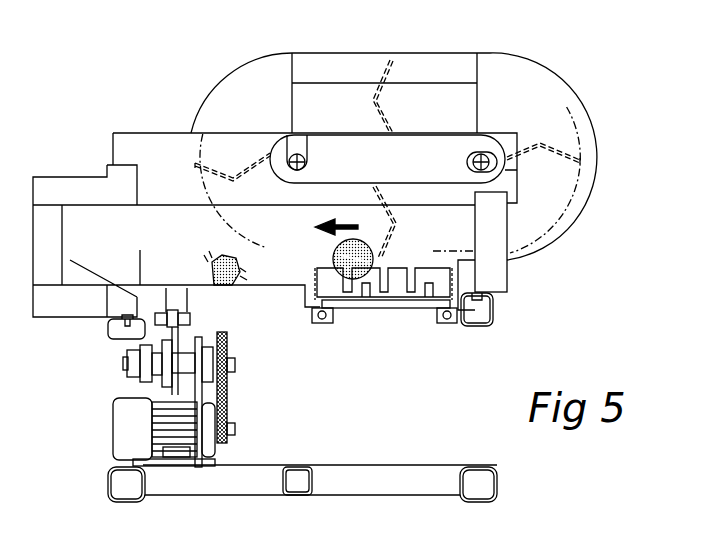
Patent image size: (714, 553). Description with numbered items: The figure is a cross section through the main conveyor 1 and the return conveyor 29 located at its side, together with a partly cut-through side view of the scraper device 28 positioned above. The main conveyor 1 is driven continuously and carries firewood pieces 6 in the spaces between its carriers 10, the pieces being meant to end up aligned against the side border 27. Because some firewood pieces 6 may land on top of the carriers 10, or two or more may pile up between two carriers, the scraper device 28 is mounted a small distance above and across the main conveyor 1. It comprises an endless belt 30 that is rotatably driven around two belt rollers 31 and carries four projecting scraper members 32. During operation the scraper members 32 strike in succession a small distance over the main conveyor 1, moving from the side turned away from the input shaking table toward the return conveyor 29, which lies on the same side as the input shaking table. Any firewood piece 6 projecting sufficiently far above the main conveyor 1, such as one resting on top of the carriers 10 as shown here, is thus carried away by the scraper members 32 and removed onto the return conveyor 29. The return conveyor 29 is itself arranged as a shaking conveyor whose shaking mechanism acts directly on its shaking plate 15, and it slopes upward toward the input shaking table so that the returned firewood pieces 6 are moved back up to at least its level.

The main conveyor 1 is at (434, 351).
The firewood pieces 6 is at (335, 260).
The carriers 10 is at (320, 282).
The shaking plate 15 is at (278, 290).
The side border 27 is at (453, 270).
The scraper device 28 is at (196, 69).
The return conveyor 29 is at (97, 366).
The endless belt 30 is at (310, 185).
The belt rollers 31 is at (297, 150).
The scraper members 32 is at (385, 253).